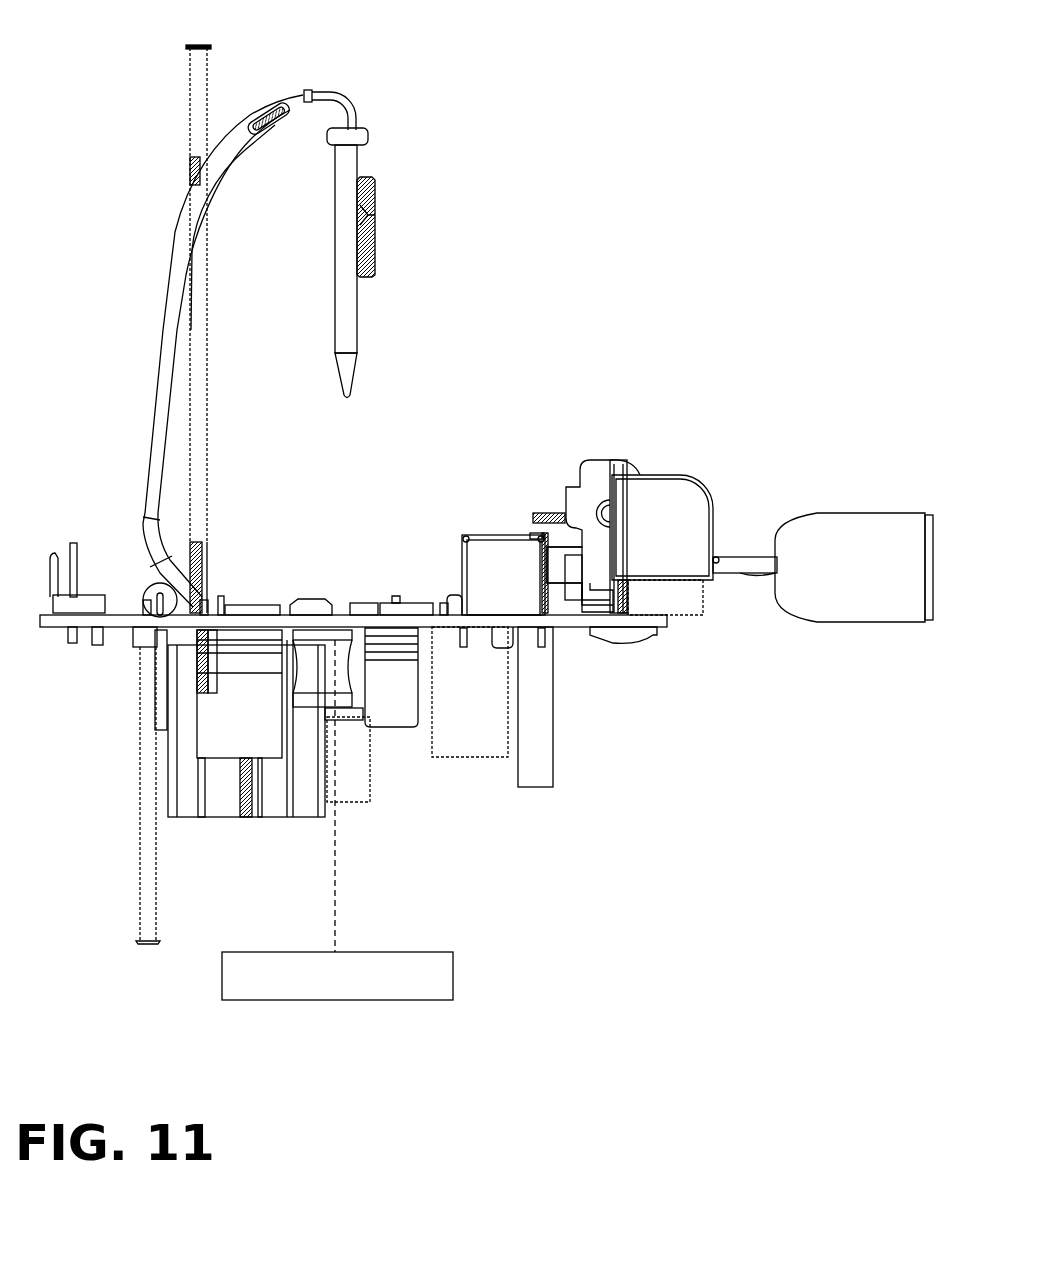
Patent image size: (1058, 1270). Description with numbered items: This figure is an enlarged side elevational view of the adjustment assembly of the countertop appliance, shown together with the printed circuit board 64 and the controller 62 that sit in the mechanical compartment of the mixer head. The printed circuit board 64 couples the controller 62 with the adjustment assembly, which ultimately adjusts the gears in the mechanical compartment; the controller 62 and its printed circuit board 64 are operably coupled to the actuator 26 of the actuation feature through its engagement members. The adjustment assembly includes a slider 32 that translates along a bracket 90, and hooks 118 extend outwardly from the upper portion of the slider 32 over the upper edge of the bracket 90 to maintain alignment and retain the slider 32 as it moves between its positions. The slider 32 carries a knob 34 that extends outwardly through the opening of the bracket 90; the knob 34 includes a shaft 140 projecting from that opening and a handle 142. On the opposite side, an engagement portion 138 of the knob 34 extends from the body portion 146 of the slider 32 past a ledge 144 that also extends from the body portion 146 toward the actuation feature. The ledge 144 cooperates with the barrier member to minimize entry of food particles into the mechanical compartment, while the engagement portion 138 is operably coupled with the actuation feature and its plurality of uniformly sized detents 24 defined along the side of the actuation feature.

The detents 24 is at (450, 602).
The actuator 26 is at (482, 593).
The slider 32 is at (588, 467).
The knob 34 is at (547, 567).
The controller 62 is at (397, 1000).
The printed circuit board 64 is at (312, 598).
The bracket 90 is at (692, 470).
The hooks 118 is at (635, 473).
The engagement portion 138 is at (570, 572).
The shaft 140 is at (730, 563).
The handle 142 is at (858, 535).
The ledge 144 is at (545, 513).
The body portion 146 is at (595, 577).